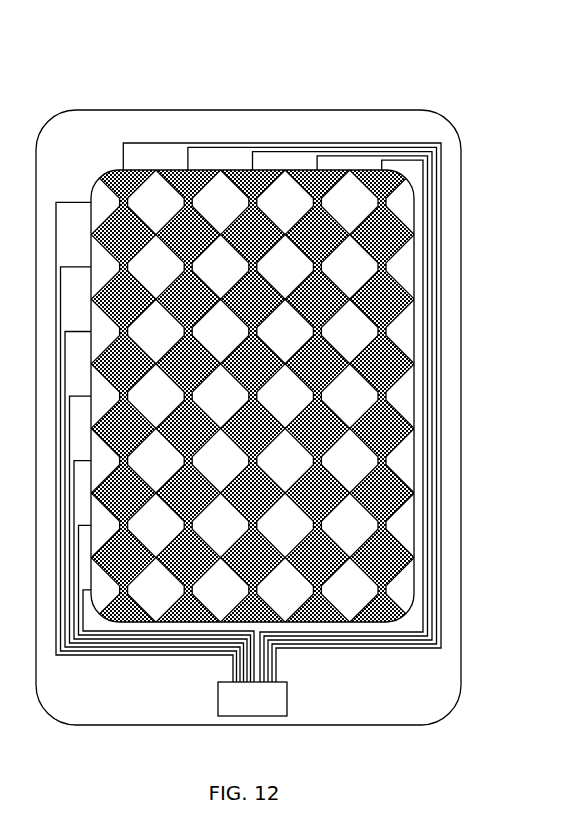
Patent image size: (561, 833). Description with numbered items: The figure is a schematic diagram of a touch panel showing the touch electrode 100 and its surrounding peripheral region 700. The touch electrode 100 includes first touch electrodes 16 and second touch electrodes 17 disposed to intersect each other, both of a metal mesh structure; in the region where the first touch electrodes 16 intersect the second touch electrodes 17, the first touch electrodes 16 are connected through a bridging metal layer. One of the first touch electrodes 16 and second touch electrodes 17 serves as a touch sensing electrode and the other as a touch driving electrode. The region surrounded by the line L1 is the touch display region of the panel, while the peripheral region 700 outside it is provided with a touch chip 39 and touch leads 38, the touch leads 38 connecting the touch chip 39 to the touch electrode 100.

The touch electrode 100 is at (291, 317).
The first touch electrodes 16 is at (365, 197).
The second touch electrodes 17 is at (323, 178).
The touch leads 38 is at (418, 152).
The line L1 is at (413, 603).
The peripheral region 700 is at (446, 667).
The touch chip 39 is at (274, 708).